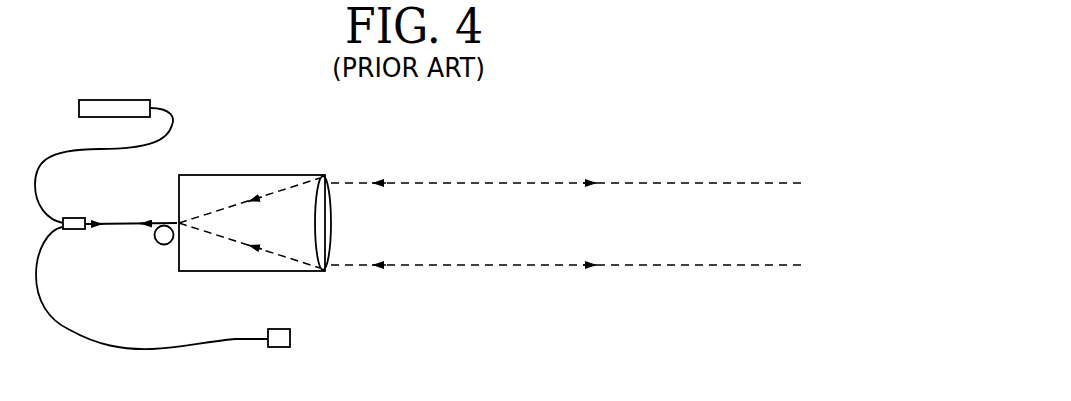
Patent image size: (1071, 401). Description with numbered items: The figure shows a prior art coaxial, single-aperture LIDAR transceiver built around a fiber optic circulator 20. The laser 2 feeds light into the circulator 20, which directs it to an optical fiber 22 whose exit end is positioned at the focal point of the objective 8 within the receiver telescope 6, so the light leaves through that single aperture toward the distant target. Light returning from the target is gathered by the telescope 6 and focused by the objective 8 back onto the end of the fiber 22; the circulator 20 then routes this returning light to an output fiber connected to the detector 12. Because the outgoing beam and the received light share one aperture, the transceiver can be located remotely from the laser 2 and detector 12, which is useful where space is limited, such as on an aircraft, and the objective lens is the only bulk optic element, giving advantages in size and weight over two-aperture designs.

The laser 2 is at (113, 107).
The receiver telescope 6 is at (277, 150).
The objective 8 is at (322, 221).
The detector 12 is at (280, 348).
The fiber optic circulator 20 is at (81, 232).
The optical fiber 22 is at (164, 245).